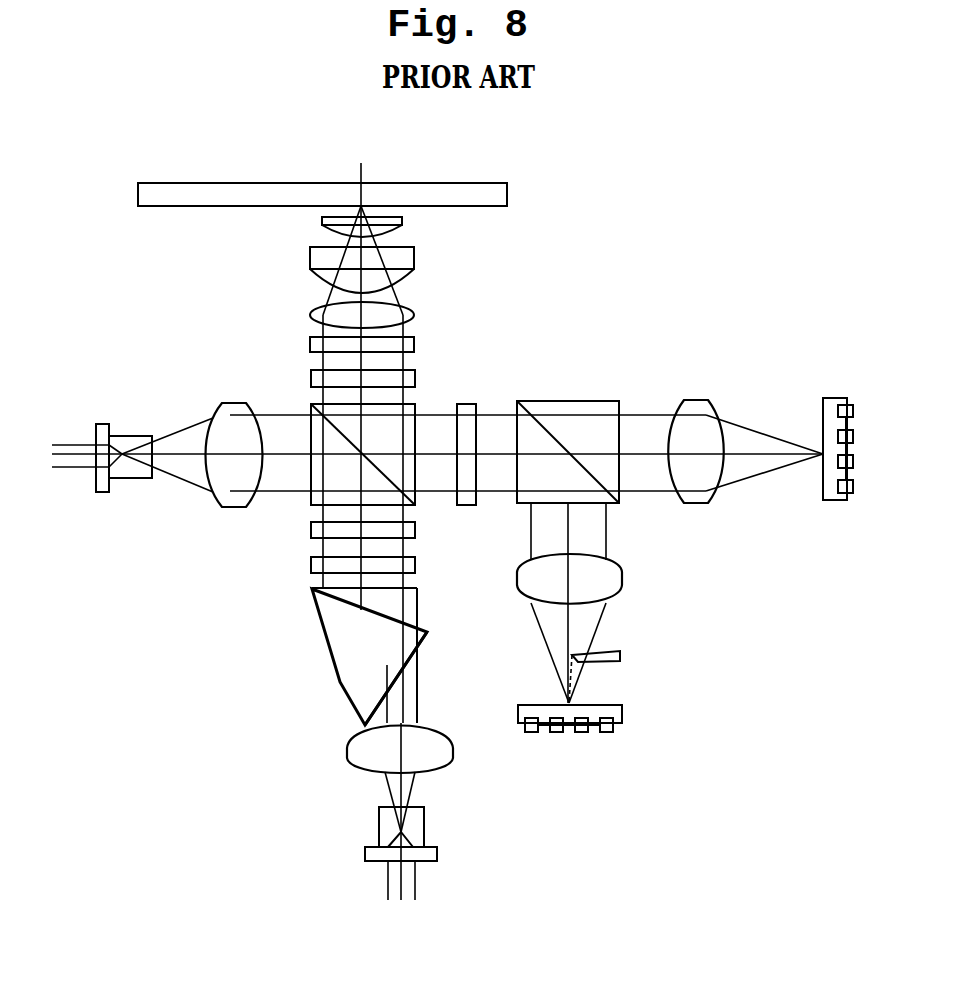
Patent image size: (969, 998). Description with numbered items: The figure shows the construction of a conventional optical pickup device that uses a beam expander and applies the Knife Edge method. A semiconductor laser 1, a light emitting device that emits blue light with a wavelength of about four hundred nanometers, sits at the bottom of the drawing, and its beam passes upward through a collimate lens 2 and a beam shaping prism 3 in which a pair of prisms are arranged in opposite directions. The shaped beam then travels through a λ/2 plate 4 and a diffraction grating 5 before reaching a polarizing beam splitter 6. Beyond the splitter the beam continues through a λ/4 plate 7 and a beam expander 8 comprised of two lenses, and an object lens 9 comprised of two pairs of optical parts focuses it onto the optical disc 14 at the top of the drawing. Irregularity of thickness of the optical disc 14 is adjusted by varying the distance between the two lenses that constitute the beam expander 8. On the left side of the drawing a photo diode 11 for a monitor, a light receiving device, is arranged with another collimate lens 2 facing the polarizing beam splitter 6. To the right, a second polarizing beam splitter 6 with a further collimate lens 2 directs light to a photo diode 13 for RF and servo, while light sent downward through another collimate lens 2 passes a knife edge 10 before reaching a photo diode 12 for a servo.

The semiconductor laser 1 is at (424, 824).
The collimate lens 2 is at (228, 404).
The beam shaping prism 3 is at (283, 598).
The λ/2 plate 4 is at (472, 404).
The diffraction grating 5 is at (311, 530).
The polarizing beam splitter 6 is at (418, 405).
The λ/4 plate 7 is at (311, 378).
The beam expander 8 is at (428, 295).
The object lens 9 is at (430, 210).
The knife edge 10 is at (620, 656).
The photo diode for a monitor 11 is at (128, 436).
The photo diode for a servo 12 is at (622, 712).
The photo diode for RF and servo 13 is at (836, 398).
The optical disc 14 is at (508, 192).